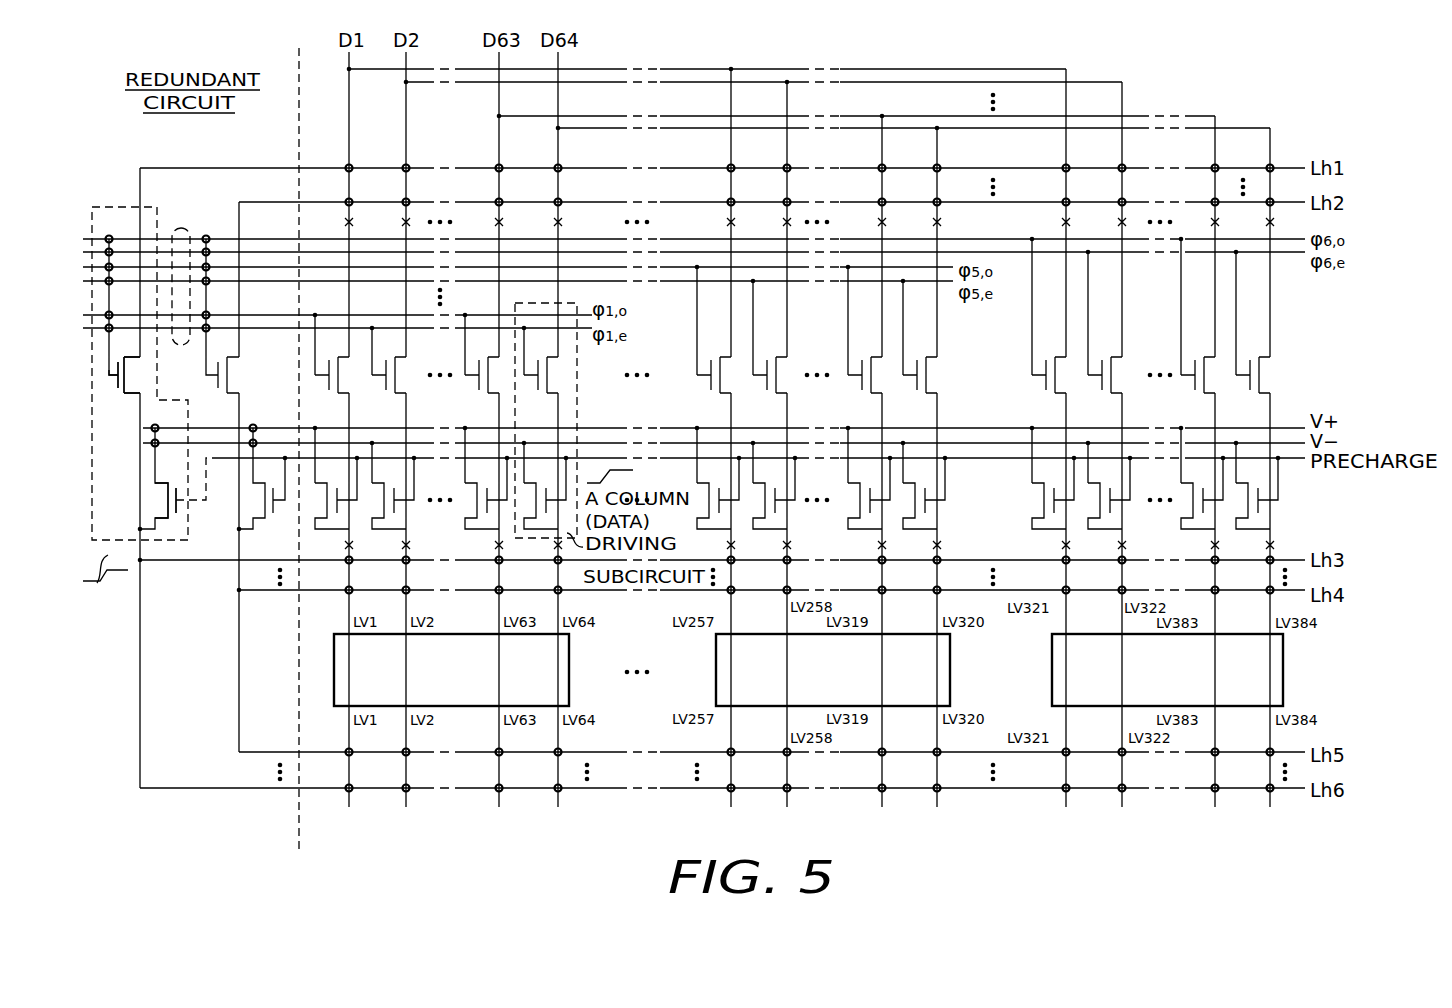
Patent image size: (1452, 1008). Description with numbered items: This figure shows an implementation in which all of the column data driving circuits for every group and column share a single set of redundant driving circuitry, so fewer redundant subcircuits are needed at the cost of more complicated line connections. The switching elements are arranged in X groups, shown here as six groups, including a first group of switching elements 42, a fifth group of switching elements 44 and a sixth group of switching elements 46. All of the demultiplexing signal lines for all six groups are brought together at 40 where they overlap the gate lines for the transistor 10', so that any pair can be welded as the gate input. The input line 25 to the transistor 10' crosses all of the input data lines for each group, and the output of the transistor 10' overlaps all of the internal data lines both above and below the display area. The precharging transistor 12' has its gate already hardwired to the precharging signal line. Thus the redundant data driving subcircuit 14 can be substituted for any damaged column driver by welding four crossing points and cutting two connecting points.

The redundant data driving subcircuit 14 is at (118, 206).
The input line 25 is at (190, 168).
The demultiplexing signal lines 40 is at (178, 228).
The transistor 10' is at (117, 397).
The precharging transistor 12' is at (133, 480).
The group of switching elements 42 is at (570, 678).
The group of switching elements 44 is at (716, 660).
The group of switching elements 46 is at (1052, 658).